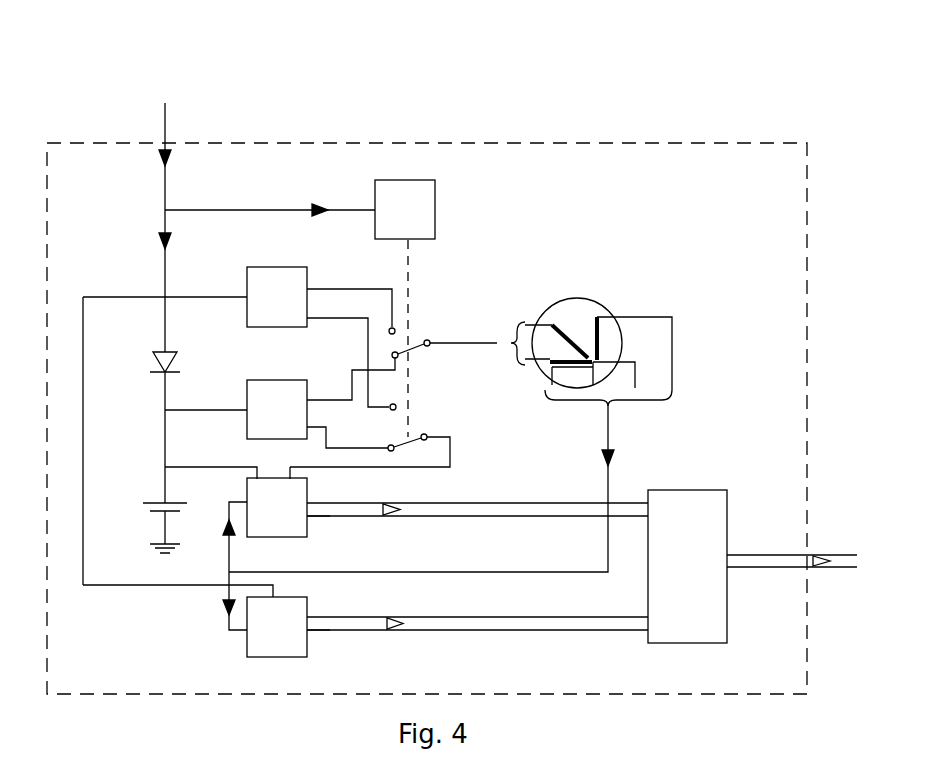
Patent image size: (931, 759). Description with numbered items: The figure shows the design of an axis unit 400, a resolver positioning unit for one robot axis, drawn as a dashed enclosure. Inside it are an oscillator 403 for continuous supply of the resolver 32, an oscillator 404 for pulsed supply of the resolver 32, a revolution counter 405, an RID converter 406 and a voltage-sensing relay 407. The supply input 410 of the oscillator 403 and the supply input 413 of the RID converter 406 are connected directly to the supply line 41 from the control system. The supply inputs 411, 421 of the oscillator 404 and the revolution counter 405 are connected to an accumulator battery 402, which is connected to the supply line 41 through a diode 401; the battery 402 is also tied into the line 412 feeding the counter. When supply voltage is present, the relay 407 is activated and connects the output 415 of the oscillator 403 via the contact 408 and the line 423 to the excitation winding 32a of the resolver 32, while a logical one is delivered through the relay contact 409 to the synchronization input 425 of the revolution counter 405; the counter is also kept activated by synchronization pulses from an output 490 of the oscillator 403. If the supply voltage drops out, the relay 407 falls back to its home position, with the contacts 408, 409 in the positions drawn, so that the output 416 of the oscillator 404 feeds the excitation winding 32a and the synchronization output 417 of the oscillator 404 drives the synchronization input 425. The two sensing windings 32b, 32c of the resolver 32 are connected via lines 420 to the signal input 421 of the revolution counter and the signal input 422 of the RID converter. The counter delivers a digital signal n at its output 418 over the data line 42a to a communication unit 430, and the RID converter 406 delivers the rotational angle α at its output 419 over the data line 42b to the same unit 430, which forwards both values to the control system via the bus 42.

The axis unit 400 is at (727, 168).
The supply line 41 is at (165, 118).
The bus 42 is at (737, 555).
The data line 42a is at (503, 502).
The data line 42b is at (505, 616).
The resolver 32 is at (575, 302).
The excitation winding 32a is at (546, 328).
The sensing winding 32b is at (600, 330).
The sensing winding 32c is at (556, 376).
The diode 401 is at (180, 358).
The accumulator battery 402 is at (160, 501).
The oscillator 403 is at (272, 272).
The oscillator 404 is at (276, 388).
The revolution counter 405 is at (302, 497).
The RID converter 406 is at (297, 612).
The voltage-sensing relay 407 is at (400, 180).
The relay contact 408 is at (418, 348).
The relay contact 409 is at (422, 436).
The supply input 410 is at (246, 294).
The supply input 411 is at (246, 408).
The supply line 412 is at (253, 466).
The supply input 413 is at (276, 596).
The output 415 is at (312, 289).
The output 416 is at (309, 398).
The synchronization output 417 is at (308, 427).
The output 418 is at (308, 518).
The output 419 is at (307, 640).
The lines 420 is at (612, 478).
The signal input 421 is at (246, 502).
The signal input 422 is at (246, 637).
The line 423 is at (456, 343).
The synchronization input 425 is at (288, 478).
The communication unit 430 is at (700, 500).
The output 490 is at (351, 352).